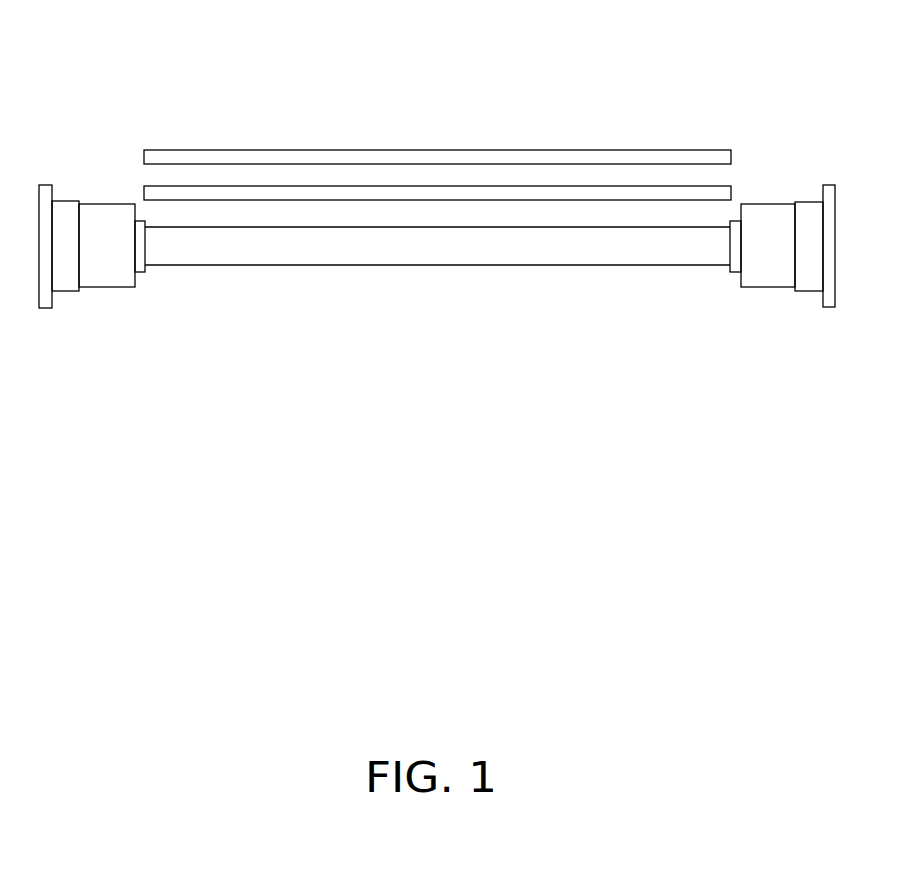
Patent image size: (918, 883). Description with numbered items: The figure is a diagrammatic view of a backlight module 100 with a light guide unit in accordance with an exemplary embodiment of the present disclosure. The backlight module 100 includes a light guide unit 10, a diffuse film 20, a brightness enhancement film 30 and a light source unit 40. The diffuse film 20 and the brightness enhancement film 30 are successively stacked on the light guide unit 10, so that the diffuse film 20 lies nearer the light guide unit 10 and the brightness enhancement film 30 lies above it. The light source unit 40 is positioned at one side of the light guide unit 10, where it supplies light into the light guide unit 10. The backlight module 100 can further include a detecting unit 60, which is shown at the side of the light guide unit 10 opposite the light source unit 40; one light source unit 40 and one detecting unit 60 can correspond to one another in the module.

The backlight module 100 is at (407, 60).
The light guide unit 10 is at (548, 248).
The diffuse film 20 is at (723, 190).
The brightness enhancement film 30 is at (675, 155).
The light source unit 40 is at (102, 273).
The detecting unit 60 is at (766, 275).